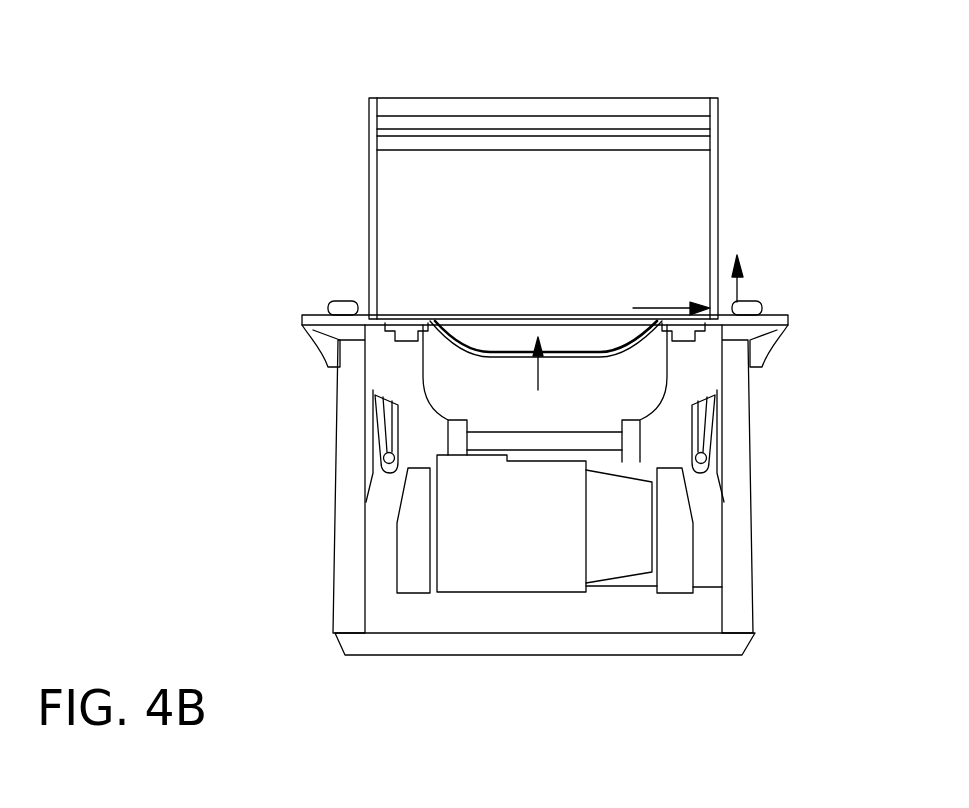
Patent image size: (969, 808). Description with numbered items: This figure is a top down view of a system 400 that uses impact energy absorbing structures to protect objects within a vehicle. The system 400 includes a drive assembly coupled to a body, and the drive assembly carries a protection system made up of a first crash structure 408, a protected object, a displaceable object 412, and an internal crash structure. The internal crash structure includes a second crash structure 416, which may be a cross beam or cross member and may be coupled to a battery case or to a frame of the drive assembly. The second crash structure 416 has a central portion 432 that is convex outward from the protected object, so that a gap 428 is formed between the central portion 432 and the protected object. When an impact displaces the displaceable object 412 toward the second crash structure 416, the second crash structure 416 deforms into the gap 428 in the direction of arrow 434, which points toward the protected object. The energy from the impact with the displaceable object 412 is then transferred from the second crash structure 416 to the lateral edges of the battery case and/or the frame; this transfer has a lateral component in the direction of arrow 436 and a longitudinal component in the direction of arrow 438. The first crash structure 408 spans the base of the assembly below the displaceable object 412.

The system 400 is at (220, 67).
The first crash structure 408 is at (395, 647).
The displaceable object 412 is at (473, 538).
The second crash structure 416 is at (430, 347).
The gap 428 is at (515, 332).
The central portion 432 is at (475, 348).
The arrow 434 is at (538, 382).
The arrow 436 is at (683, 305).
The arrow 438 is at (735, 305).